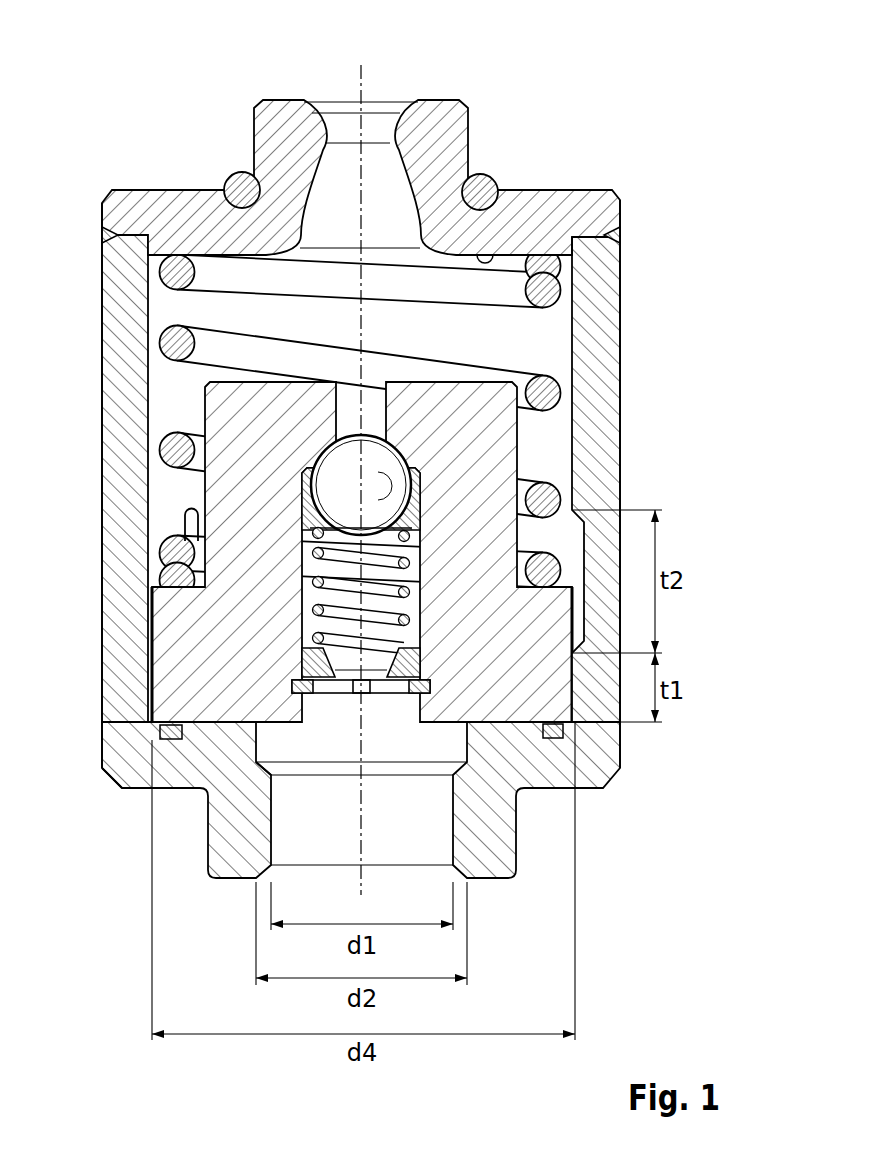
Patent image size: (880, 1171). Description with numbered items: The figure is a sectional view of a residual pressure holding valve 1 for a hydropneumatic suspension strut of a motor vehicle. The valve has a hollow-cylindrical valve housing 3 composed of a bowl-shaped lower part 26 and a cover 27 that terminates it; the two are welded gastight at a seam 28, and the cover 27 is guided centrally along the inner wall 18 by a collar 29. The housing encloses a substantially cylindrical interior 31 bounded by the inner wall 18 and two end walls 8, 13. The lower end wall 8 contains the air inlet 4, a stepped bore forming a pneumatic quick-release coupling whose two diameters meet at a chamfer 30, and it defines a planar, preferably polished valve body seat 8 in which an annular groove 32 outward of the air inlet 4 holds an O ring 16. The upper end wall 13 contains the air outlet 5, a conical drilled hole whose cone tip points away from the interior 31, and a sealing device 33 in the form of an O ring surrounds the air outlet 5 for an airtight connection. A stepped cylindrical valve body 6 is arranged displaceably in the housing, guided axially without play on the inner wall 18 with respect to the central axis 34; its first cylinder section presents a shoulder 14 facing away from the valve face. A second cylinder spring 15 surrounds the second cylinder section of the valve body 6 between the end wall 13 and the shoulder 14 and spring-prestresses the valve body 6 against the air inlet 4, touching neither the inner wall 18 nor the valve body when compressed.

The residual pressure holding valve 1 is at (548, 82).
The valve housing 3 is at (632, 437).
The air inlet 4 is at (442, 830).
The air outlet 5 is at (330, 118).
The valve body 6 is at (165, 617).
The end wall / valve body seat 8 is at (193, 723).
The end wall 13 is at (500, 253).
The shoulder 14 is at (150, 573).
The second cylinder spring 15 is at (165, 332).
The O ring 16 is at (120, 774).
The inner wall 18 is at (150, 393).
The lower part 26 is at (605, 742).
The cover 27 is at (148, 196).
The seam 28 is at (625, 238).
The collar 29 is at (588, 258).
The chamfer 30 is at (272, 772).
The interior 31 is at (552, 352).
The annular groove 32 is at (152, 730).
The sealing device 33 is at (240, 172).
The central axis 34 is at (361, 77).